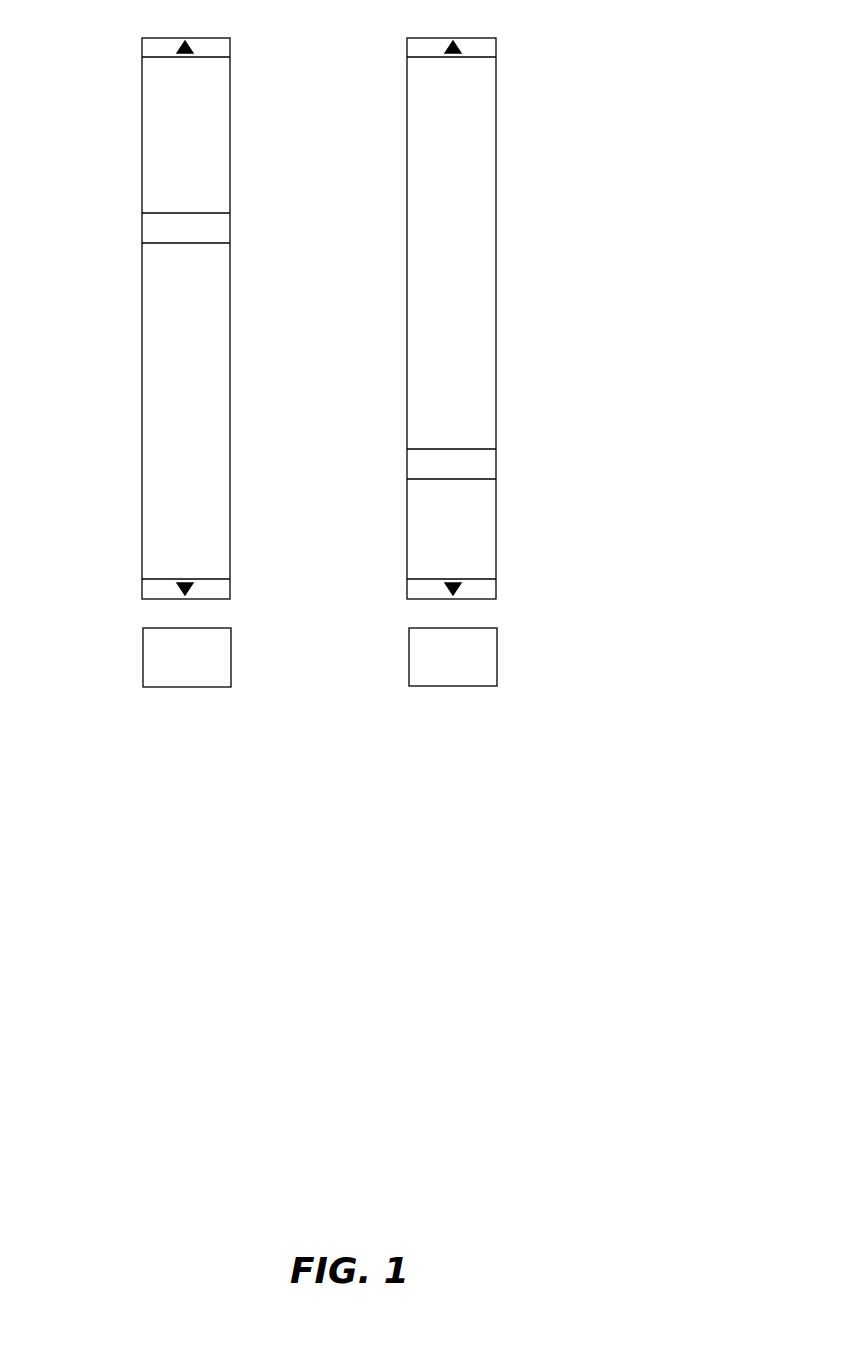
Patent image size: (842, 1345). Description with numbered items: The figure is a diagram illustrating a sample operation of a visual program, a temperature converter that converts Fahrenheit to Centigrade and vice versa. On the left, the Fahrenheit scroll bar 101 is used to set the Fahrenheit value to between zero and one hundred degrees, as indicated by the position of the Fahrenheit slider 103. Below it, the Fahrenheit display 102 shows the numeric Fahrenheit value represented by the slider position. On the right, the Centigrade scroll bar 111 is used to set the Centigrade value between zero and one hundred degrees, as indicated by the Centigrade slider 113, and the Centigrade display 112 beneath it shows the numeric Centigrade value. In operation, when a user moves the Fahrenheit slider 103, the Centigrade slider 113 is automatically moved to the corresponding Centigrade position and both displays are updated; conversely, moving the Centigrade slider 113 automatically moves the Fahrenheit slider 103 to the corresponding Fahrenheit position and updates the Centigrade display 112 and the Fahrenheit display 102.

The Fahrenheit scroll bar 101 is at (230, 318).
The Fahrenheit display 102 is at (231, 657).
The Fahrenheit slider 103 is at (230, 230).
The Centigrade scroll bar 111 is at (496, 318).
The Centigrade display 112 is at (497, 656).
The Centigrade slider 113 is at (496, 470).